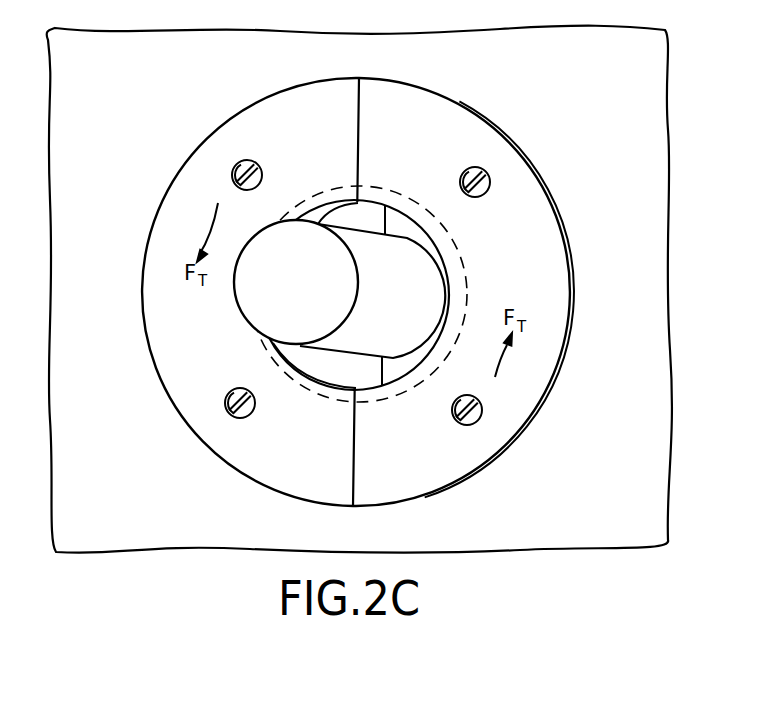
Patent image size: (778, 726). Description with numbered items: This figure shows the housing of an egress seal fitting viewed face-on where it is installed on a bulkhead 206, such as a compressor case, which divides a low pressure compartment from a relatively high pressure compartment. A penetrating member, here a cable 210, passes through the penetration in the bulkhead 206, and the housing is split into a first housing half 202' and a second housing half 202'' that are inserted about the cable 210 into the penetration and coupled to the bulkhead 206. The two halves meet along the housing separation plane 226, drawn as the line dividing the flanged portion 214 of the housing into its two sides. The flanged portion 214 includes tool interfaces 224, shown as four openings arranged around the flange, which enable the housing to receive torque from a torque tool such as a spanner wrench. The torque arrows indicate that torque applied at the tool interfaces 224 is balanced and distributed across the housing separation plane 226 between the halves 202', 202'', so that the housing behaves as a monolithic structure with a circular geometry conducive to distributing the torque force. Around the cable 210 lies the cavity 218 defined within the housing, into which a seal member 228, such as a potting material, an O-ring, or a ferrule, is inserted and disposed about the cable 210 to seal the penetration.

The bulkhead 206 is at (358, 292).
The first housing half 202' is at (497, 292).
The second housing half 202'' is at (217, 292).
The flanged portion 214 is at (472, 125).
The housing separation plane 226 is at (362, 147).
The tool interfaces 224 is at (492, 187).
The cavity 218 is at (438, 245).
The cable 210 is at (305, 294).
The seal member 228 is at (396, 228).